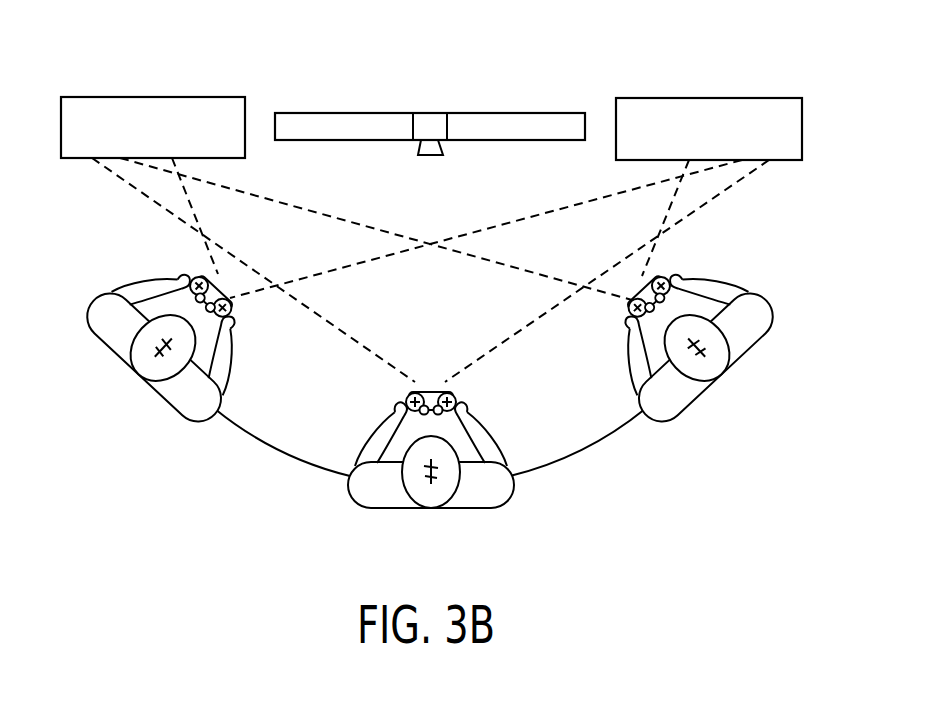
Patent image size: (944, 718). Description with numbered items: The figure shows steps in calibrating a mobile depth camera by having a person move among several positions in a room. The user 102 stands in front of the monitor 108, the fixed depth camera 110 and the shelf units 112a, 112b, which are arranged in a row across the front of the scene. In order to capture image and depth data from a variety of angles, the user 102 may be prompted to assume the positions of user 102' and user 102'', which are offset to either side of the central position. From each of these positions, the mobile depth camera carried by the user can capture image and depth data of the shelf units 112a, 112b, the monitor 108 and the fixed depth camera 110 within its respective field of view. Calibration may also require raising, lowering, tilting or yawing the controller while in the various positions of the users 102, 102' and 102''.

The user 102 is at (431, 480).
The user position 102' is at (178, 357).
The user position 102'' is at (682, 335).
The monitor 108 is at (520, 121).
The fixed depth camera 110 is at (433, 119).
The shelf unit 112a is at (176, 97).
The shelf unit 112b is at (718, 98).